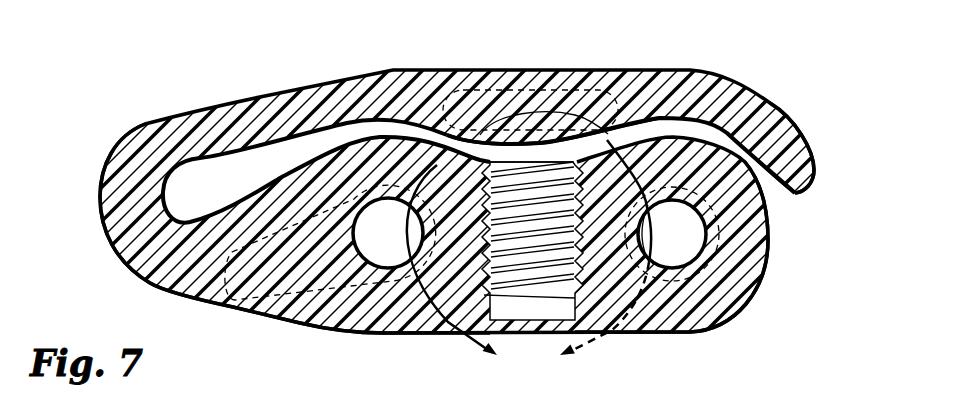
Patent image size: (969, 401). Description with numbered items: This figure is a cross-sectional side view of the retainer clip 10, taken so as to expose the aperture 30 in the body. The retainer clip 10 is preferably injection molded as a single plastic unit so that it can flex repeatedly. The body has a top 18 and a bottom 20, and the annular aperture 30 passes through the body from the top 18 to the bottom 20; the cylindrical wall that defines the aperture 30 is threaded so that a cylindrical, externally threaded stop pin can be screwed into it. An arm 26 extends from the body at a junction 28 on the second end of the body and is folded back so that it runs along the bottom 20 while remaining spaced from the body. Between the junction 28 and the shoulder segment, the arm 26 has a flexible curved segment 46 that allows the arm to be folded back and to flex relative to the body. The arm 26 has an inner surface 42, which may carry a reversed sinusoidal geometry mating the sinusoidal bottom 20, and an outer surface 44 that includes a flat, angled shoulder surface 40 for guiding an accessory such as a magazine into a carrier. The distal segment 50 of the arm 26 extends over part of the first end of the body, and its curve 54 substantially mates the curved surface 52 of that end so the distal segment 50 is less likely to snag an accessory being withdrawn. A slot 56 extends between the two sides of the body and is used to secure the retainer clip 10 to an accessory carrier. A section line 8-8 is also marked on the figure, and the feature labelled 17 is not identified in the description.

The retainer clip 10 is at (214, 78).
The arm 26 is at (696, 57).
The shoulder surface 40 is at (264, 97).
The curved segment 46 is at (100, 197).
The junction 28 is at (208, 303).
The lower jaw 17 is at (413, 333).
The top 18 is at (633, 333).
The curved surface 52 is at (770, 235).
The distal segment 50 is at (812, 156).
The curve 54 is at (792, 195).
The bottom 20 is at (477, 147).
The inner surface 42 is at (497, 153).
The outer surface 44 is at (570, 70).
The aperture 30 is at (572, 308).
The slot 56 is at (372, 265).
The section line 8- 8 is at (529, 263).